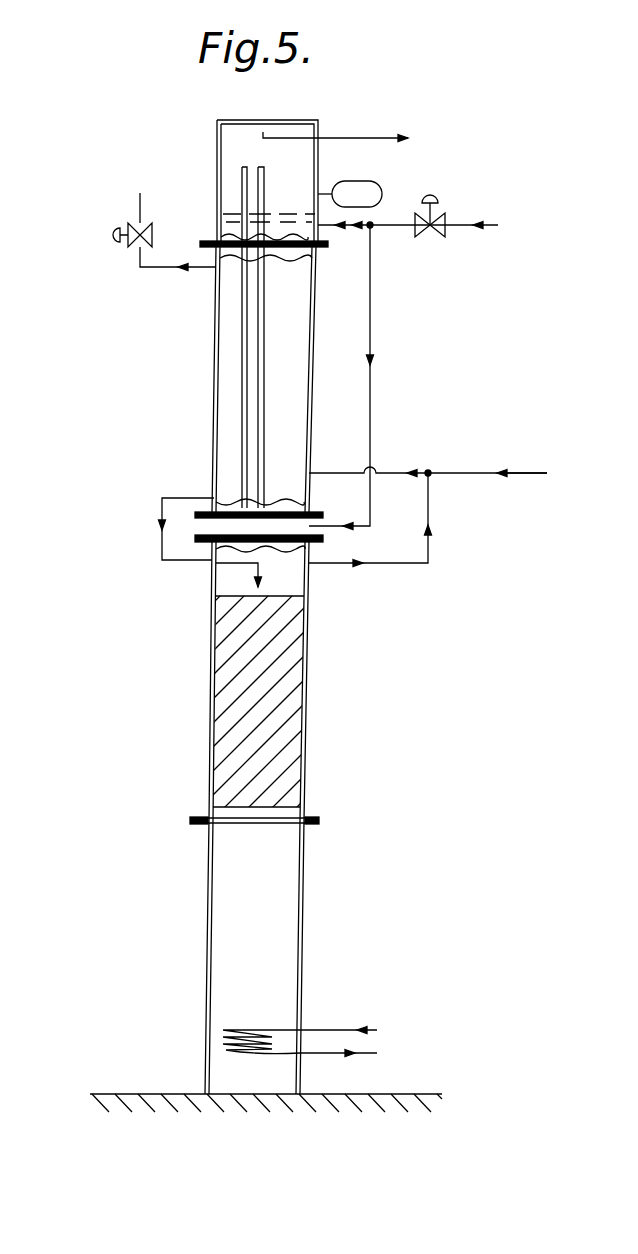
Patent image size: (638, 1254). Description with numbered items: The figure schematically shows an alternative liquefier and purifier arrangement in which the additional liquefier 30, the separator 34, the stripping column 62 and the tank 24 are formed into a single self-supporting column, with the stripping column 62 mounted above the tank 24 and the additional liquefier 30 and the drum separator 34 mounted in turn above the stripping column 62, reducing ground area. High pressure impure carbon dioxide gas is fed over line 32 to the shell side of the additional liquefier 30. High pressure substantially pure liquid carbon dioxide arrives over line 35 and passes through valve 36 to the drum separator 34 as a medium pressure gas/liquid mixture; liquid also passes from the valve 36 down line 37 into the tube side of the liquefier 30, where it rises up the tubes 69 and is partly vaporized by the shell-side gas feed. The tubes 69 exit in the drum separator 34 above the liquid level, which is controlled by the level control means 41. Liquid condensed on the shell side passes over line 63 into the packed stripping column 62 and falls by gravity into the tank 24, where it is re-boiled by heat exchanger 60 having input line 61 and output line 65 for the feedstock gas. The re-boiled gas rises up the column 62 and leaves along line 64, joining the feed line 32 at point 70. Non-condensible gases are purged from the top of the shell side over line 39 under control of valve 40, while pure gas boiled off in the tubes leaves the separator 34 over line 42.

The tank 24 is at (305, 943).
The additional liquefier 30 is at (212, 366).
The feed line 32 is at (519, 472).
The drum separator 34 is at (218, 152).
The line 35 is at (458, 224).
The valve 36 is at (440, 201).
The line 37 is at (376, 344).
The line 39 is at (142, 276).
The valve 40 is at (126, 228).
The level control means 41 is at (380, 188).
The line 42 is at (396, 122).
The heat exchanger 60 is at (238, 1030).
The input line 61 is at (341, 1030).
The stripping column 62 is at (298, 771).
The line 63 is at (162, 518).
The line 64 is at (395, 565).
The output line 65 is at (368, 1054).
The tubes 69 is at (240, 413).
The point 70 is at (430, 468).